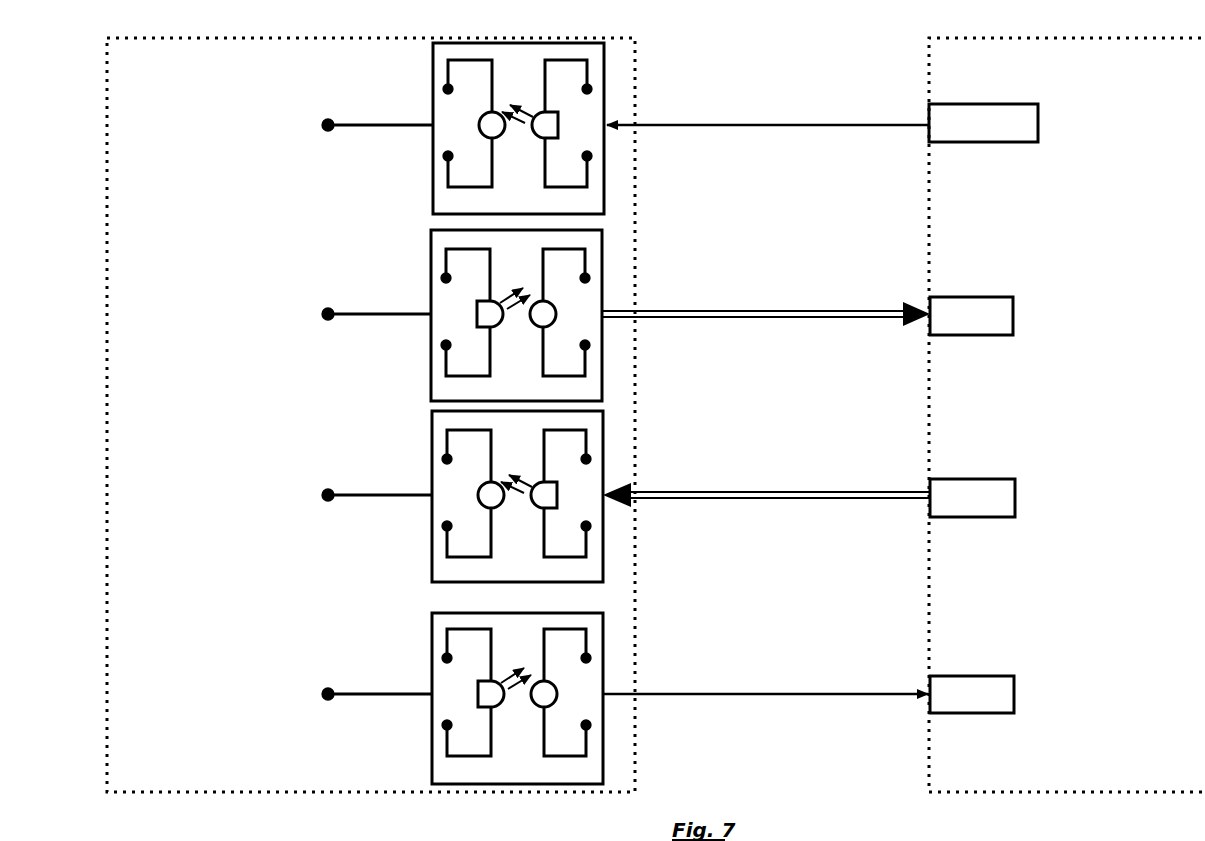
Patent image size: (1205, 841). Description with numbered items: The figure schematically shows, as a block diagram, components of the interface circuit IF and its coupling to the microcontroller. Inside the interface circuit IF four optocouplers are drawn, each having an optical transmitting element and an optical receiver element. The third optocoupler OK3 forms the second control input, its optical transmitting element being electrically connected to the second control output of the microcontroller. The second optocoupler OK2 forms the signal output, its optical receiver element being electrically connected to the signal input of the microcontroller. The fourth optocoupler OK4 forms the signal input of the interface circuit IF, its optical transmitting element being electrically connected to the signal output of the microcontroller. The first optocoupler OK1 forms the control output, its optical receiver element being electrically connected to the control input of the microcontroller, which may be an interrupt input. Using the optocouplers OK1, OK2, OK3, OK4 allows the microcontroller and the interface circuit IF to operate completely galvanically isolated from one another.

The interface circuit IF is at (266, 743).
The first optocoupler OK1 is at (500, 776).
The second optocoupler OK2 is at (499, 393).
The third optocoupler OK3 is at (501, 206).
The fourth optocoupler OK4 is at (500, 574).